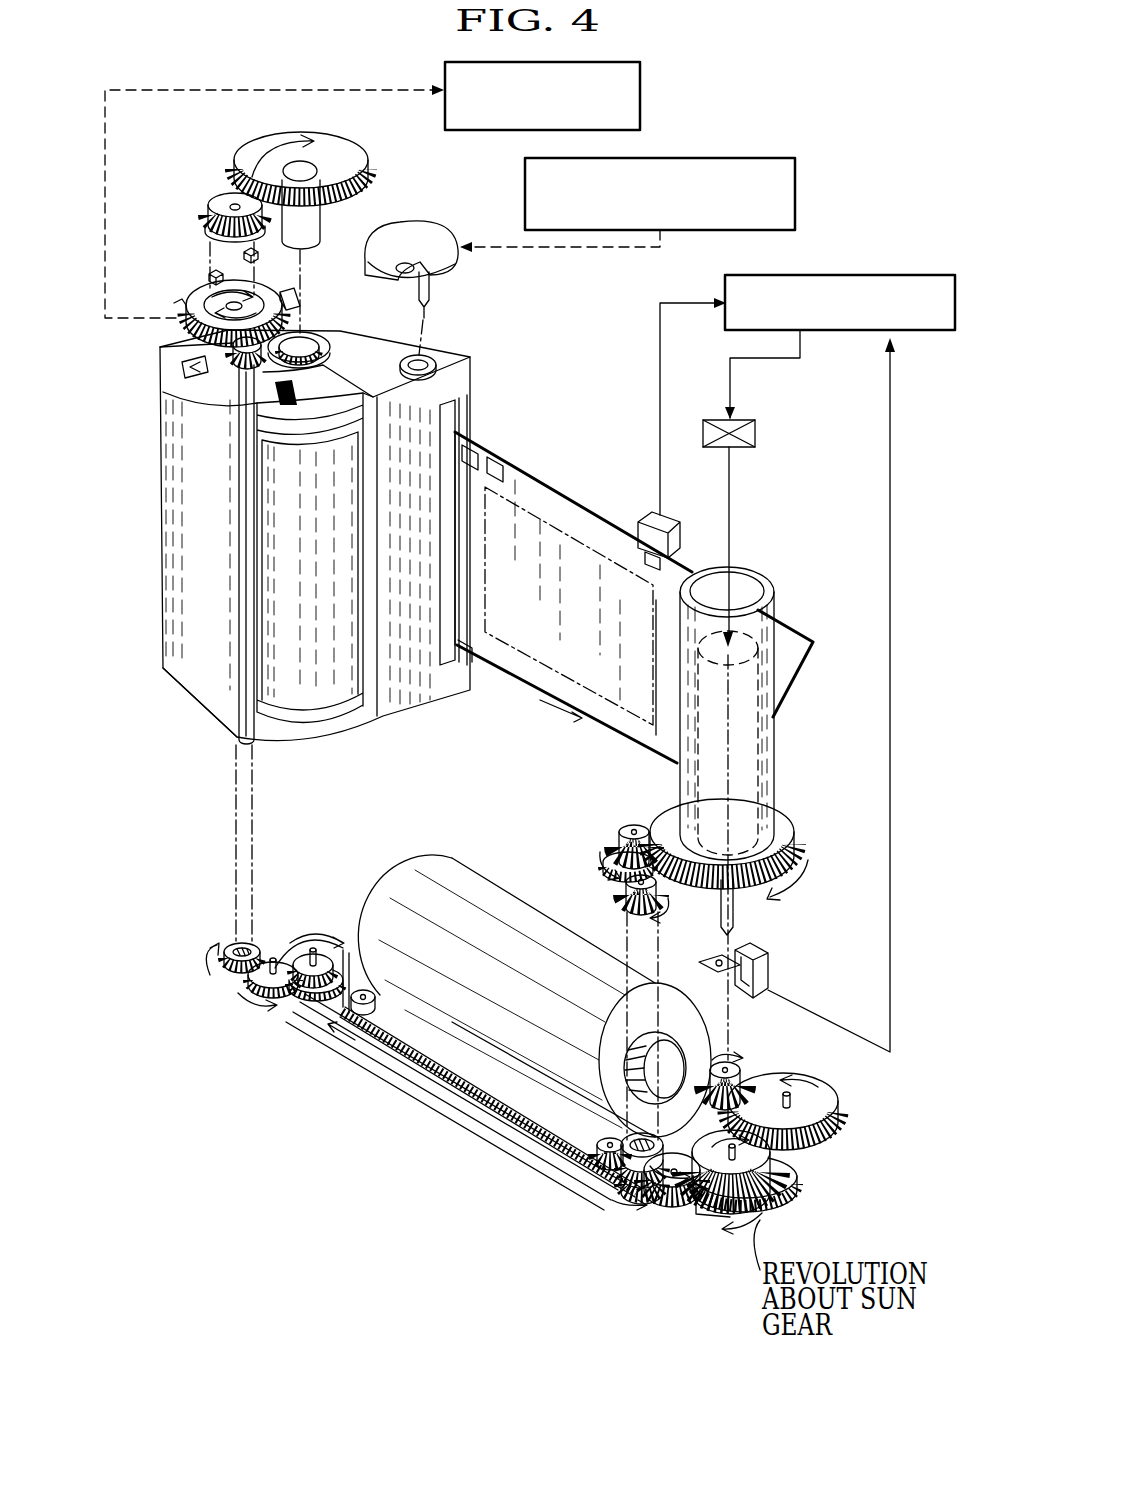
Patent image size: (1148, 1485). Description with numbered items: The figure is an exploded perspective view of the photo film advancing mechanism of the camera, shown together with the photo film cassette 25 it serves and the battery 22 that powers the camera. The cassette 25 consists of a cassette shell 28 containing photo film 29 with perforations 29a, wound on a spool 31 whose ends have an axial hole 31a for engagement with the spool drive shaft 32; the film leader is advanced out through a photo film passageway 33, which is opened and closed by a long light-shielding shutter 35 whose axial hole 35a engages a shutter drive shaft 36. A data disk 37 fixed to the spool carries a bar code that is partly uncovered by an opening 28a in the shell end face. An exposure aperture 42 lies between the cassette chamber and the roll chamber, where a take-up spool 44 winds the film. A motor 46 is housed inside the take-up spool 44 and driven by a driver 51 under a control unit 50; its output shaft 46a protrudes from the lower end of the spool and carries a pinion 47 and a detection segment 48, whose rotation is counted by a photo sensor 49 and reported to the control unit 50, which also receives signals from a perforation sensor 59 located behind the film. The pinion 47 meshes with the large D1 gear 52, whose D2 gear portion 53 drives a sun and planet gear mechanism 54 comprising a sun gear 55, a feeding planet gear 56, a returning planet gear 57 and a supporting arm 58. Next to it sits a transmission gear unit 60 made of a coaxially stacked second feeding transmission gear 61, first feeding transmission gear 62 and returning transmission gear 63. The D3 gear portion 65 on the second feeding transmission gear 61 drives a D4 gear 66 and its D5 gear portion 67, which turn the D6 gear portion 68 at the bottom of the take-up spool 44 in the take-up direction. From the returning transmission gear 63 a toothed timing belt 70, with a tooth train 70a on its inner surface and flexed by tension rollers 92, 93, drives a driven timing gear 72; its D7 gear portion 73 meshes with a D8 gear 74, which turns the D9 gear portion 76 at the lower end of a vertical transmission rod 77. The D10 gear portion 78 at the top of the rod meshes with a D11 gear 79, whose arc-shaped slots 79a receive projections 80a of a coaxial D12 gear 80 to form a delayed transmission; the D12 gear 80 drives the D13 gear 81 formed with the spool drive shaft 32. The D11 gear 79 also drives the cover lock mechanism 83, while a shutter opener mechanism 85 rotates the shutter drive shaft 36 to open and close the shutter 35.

The battery 22 is at (510, 875).
The photo film cassette 25 is at (370, 768).
The cassette shell 28 is at (185, 710).
The opening 28a is at (290, 290).
The photo film 29 is at (568, 495).
The perforations 29a is at (494, 452).
The spool 31 is at (345, 340).
The axial hole 31a is at (302, 332).
The spool drive shaft 32 is at (322, 232).
The photo film passageway 33 is at (460, 642).
The light-shielding shutter 35 is at (438, 548).
The axial hole 35a is at (436, 360).
The shutter drive shaft 36 is at (431, 292).
The data disk 37 is at (318, 400).
The exposure aperture 42 is at (500, 565).
The take-up spool 44 is at (762, 617).
The motor 46 is at (787, 735).
The output shaft 46a is at (741, 921).
The pinion 47 is at (737, 1078).
The detection segment 48 is at (678, 905).
The photo sensor 49 is at (785, 985).
The control unit 50 is at (845, 275).
The driver 51 is at (755, 432).
The D1 gear 52 is at (840, 1094).
The D2 gear portion 53 is at (772, 1162).
The sun and planet gear mechanism 54 is at (683, 1248).
The sun gear 55 is at (778, 1205).
The feeding planet gear 56 is at (665, 1205).
The returning planet gear 57 is at (800, 1180).
The arm 58 is at (700, 1215).
The perforation sensor 59 is at (660, 516).
The transmission gear unit 60 is at (585, 1164).
The second feeding transmission gear 61 is at (660, 1137).
The first feeding transmission gear 62 is at (603, 1187).
The returning transmission gear 63 is at (628, 1198).
The D3 gear portion 65 is at (610, 886).
The D4 gear 66 is at (615, 850).
The D5 gear portion 67 is at (632, 822).
The D6 gear portion 68 is at (802, 833).
The timing belt 70 is at (418, 1088).
The tooth train 70a is at (490, 1112).
The driven timing gear 72 is at (318, 990).
The D7 gear portion 73 is at (340, 957).
The D8 gear 74 is at (275, 960).
The D9 gear portion 76 is at (228, 945).
The transmission rod 77 is at (243, 633).
The D10 gear portion 78 is at (230, 365).
The D11 gear 79 is at (172, 338).
The slots 79a is at (180, 300).
The D12 gear 80 is at (222, 190).
The projections 80a is at (210, 272).
The D13 gear 81 is at (366, 150).
The cover lock mechanism 83 is at (645, 82).
The shutter opener mechanism 85 is at (797, 172).
The tension roller 92 is at (603, 1080).
The tension roller 93 is at (378, 996).